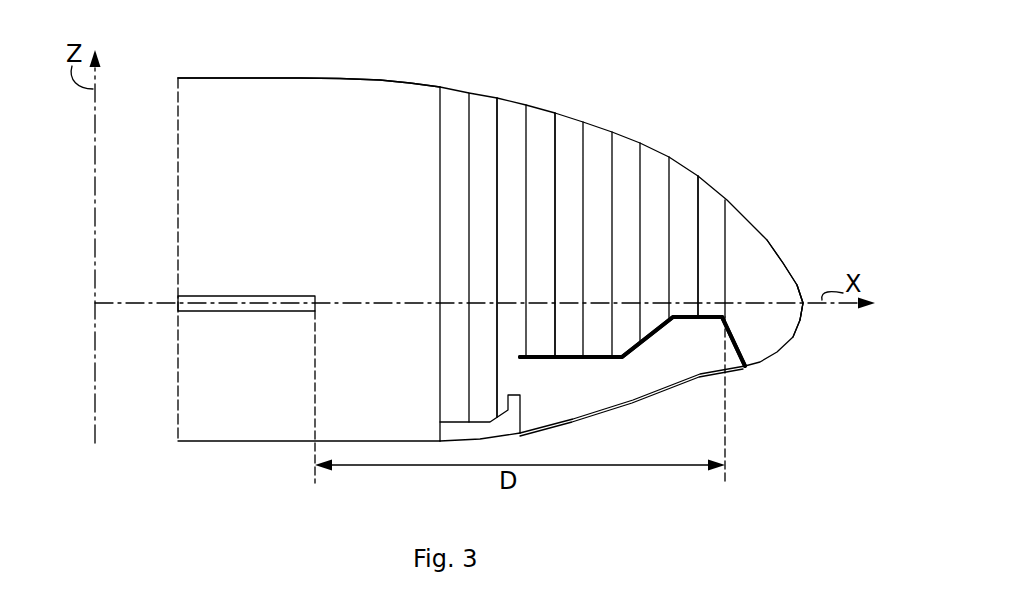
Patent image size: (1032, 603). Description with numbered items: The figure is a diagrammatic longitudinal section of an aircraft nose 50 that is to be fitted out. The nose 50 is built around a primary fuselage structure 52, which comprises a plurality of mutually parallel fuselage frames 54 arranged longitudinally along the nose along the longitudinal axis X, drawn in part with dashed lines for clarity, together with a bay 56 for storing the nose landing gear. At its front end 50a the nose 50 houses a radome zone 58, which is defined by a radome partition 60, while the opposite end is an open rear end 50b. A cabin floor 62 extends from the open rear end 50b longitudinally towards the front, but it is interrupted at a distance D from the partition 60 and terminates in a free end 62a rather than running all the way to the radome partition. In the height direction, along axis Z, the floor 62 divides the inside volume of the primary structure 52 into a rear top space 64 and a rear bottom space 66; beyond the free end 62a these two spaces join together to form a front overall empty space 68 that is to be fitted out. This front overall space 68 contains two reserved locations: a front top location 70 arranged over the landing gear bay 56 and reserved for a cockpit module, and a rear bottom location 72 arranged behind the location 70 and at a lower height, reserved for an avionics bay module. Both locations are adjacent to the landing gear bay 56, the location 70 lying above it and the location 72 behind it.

The aircraft nose 50 is at (625, 76).
The front end 50a is at (853, 352).
The open rear end 50b is at (174, 77).
The primary fuselage structure 52 is at (634, 148).
The fuselage frames 54 is at (552, 132).
The bay for storing nose landing gear 56 is at (680, 368).
The radome zone 58 is at (775, 275).
The radome partition 60 is at (728, 320).
The cabin floor 62 is at (242, 307).
The free end of the cabin floor 62a is at (318, 312).
The rear top space 64 is at (278, 130).
The rear bottom space 66 is at (242, 410).
The front overall empty space 68 is at (398, 197).
The front top location 70 is at (634, 257).
The rear bottom location 72 is at (391, 383).